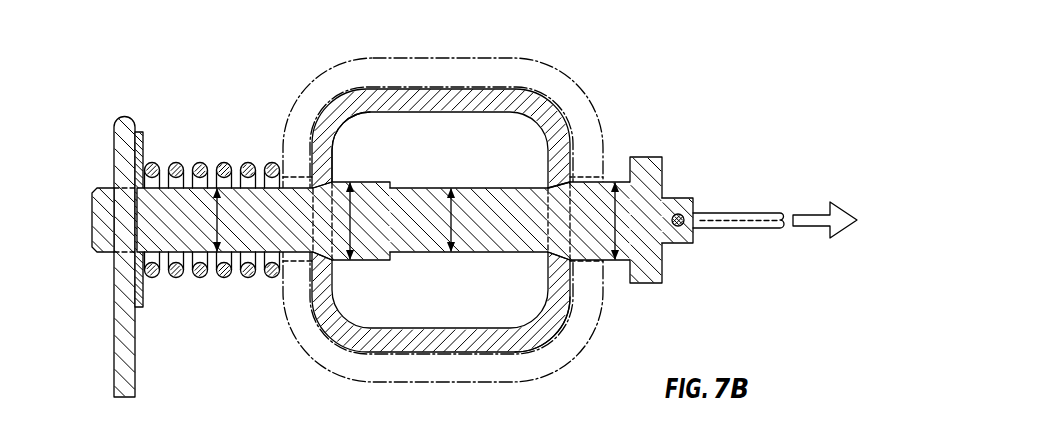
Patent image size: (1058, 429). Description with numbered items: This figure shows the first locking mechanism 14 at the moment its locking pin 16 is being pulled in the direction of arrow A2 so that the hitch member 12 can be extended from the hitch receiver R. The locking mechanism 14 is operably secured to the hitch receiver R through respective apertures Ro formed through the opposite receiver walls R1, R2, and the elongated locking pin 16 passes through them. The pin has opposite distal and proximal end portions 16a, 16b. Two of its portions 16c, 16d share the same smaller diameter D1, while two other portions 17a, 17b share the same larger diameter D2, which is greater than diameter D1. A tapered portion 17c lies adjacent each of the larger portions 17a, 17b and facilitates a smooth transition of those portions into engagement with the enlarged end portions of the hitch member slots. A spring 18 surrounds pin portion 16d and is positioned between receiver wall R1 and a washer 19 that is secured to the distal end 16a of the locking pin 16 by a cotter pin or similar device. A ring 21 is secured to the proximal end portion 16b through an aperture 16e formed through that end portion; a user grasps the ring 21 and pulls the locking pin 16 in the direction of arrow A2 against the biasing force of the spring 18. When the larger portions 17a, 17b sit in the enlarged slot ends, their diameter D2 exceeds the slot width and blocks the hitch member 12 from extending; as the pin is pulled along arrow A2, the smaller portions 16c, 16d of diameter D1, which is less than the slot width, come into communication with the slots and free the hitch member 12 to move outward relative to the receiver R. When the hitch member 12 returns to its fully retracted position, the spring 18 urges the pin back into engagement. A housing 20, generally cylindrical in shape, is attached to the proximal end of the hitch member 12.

The hitch member 12 is at (543, 122).
The first locking mechanism 14 is at (205, 132).
The locking pin 16 is at (645, 157).
The distal end portion 16a is at (107, 250).
The proximal end portion 16b is at (685, 198).
The locking pin portion 16c is at (435, 188).
The locking pin portion 16d is at (157, 252).
The aperture 16e is at (683, 225).
The locking pin portion 17a is at (607, 262).
The locking pin portion 17b is at (365, 182).
The tapered portion 17c is at (316, 186).
The spring 18 is at (173, 163).
The washer 19 is at (140, 132).
The housing 20 is at (112, 155).
The ring 21 is at (780, 212).
The arrow A2 is at (830, 238).
The diameter D1 is at (218, 221).
The diameter D2 is at (351, 221).
The hitch receiver R is at (515, 60).
The apertures Ro is at (303, 175).
The hitch receiver wall R1 is at (302, 297).
The hitch receiver wall R2 is at (560, 360).